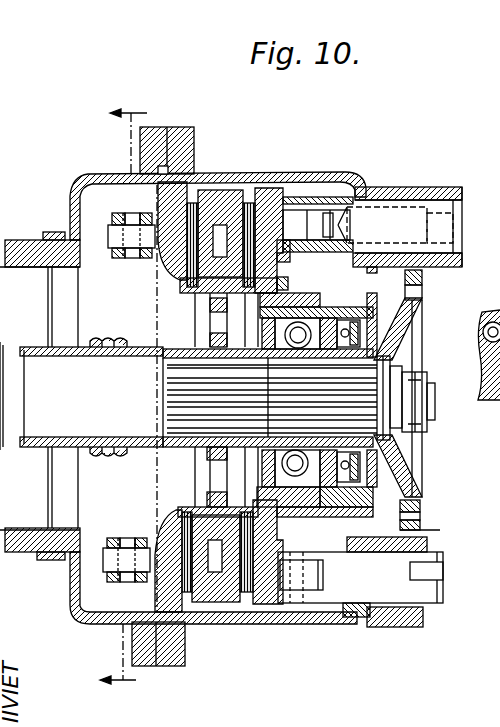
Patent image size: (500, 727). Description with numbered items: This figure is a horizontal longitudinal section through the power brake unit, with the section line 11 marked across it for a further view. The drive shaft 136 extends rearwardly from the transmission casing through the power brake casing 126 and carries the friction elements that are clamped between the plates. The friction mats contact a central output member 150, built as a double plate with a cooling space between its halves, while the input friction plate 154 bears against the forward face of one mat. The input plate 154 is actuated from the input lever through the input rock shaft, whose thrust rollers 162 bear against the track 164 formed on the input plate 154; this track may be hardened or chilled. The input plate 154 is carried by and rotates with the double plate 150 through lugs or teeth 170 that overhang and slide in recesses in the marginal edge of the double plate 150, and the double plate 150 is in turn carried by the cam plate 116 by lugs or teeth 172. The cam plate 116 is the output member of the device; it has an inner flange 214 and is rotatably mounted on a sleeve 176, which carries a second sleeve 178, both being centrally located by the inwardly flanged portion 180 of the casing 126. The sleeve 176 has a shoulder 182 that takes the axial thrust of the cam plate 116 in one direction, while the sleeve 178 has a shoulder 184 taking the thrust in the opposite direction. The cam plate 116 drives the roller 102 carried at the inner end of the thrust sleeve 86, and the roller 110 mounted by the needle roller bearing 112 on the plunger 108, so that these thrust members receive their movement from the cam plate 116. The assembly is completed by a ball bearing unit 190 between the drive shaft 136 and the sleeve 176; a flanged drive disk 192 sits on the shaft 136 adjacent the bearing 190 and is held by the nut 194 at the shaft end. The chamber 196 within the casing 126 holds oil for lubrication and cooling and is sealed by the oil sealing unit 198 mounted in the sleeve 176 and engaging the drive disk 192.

The section line 11- 11 is at (128, 397).
The thrust sleeve 86 is at (385, 218).
The roller 102 is at (316, 191).
The plunger 108 is at (387, 567).
The roller 110 is at (303, 612).
The needle roller bearing 112 is at (303, 603).
The cam plate 116 is at (270, 215).
The power brake casing 126 is at (330, 200).
The drive shaft 136 is at (43, 347).
The central output member 150 is at (248, 605).
The input friction plate 154 is at (195, 170).
The thrust rollers 162 is at (112, 230).
The track 164 is at (161, 667).
The lugs or teeth 170 is at (212, 172).
The lugs or teeth 172 is at (247, 178).
The sleeve 176 is at (370, 313).
The sleeve 178 is at (373, 300).
The inwardly flanged portion 180 is at (422, 278).
The shoulder 182 is at (277, 263).
The shoulder 184 is at (320, 292).
The ball bearing unit 190 is at (373, 358).
The flanged drive disk 192 is at (420, 501).
The nut 194 is at (397, 433).
The chamber 196 is at (183, 398).
The oil sealing unit 198 is at (353, 472).
The inner flange 214 is at (290, 283).